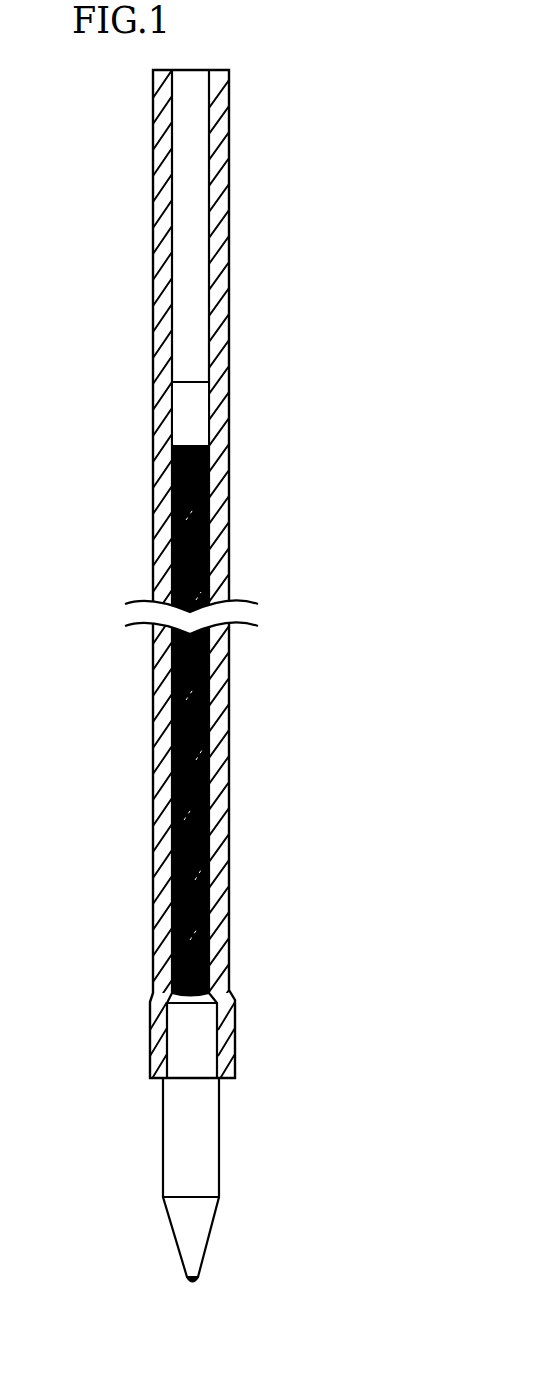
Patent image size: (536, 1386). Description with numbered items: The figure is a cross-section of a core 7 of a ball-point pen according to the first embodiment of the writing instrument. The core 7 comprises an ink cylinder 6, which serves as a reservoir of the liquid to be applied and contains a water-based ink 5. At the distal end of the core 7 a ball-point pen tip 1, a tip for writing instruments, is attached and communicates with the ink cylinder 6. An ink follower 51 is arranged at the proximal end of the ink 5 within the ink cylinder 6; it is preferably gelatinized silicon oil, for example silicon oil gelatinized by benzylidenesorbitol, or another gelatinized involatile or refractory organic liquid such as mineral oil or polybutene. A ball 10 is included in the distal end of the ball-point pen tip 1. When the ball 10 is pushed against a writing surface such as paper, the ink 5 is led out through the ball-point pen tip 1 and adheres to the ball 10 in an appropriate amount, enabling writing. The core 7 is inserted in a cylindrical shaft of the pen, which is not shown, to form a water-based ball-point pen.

The core 7 is at (238, 568).
The ink cylinder 6 is at (218, 274).
The ink 5 is at (225, 481).
The ink follower 51 is at (192, 403).
The ball-point pen tip 1 is at (200, 1151).
The ball 10 is at (192, 1284).